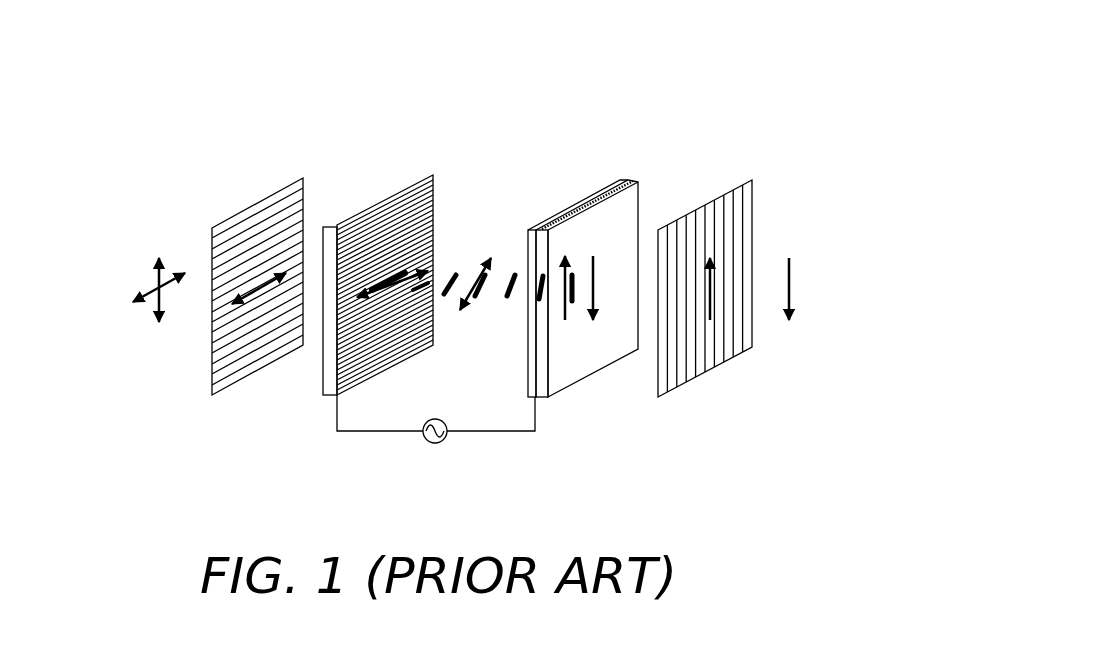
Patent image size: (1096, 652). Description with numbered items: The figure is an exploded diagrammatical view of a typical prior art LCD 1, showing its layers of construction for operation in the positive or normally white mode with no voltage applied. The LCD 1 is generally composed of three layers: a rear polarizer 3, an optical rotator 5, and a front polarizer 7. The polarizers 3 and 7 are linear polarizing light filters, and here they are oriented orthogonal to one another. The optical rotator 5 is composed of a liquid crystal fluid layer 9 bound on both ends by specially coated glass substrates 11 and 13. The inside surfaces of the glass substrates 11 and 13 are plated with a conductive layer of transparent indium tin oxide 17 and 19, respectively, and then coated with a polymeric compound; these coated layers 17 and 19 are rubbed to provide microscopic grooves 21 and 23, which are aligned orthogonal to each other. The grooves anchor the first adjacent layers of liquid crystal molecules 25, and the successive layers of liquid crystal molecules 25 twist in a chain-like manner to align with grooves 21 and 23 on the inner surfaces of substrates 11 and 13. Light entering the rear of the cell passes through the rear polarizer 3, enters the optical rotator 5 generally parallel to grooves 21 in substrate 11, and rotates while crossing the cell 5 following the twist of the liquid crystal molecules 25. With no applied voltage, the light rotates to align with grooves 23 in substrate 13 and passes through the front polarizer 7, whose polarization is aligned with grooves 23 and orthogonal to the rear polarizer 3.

The LCD 1 is at (682, 102).
The rear polarizer 3 is at (303, 178).
The optical rotator 5 is at (418, 133).
The front polarizer 7 is at (748, 180).
The liquid crystal fluid layer 9 is at (473, 230).
The glass substrate 11 is at (407, 268).
The glass substrate 13 is at (617, 291).
The indium tin oxide layer 17 is at (337, 380).
The indium tin oxide layer 19 is at (540, 392).
The grooves 21 is at (403, 330).
The grooves 23 is at (572, 205).
The liquid crystal molecules 25 is at (483, 290).